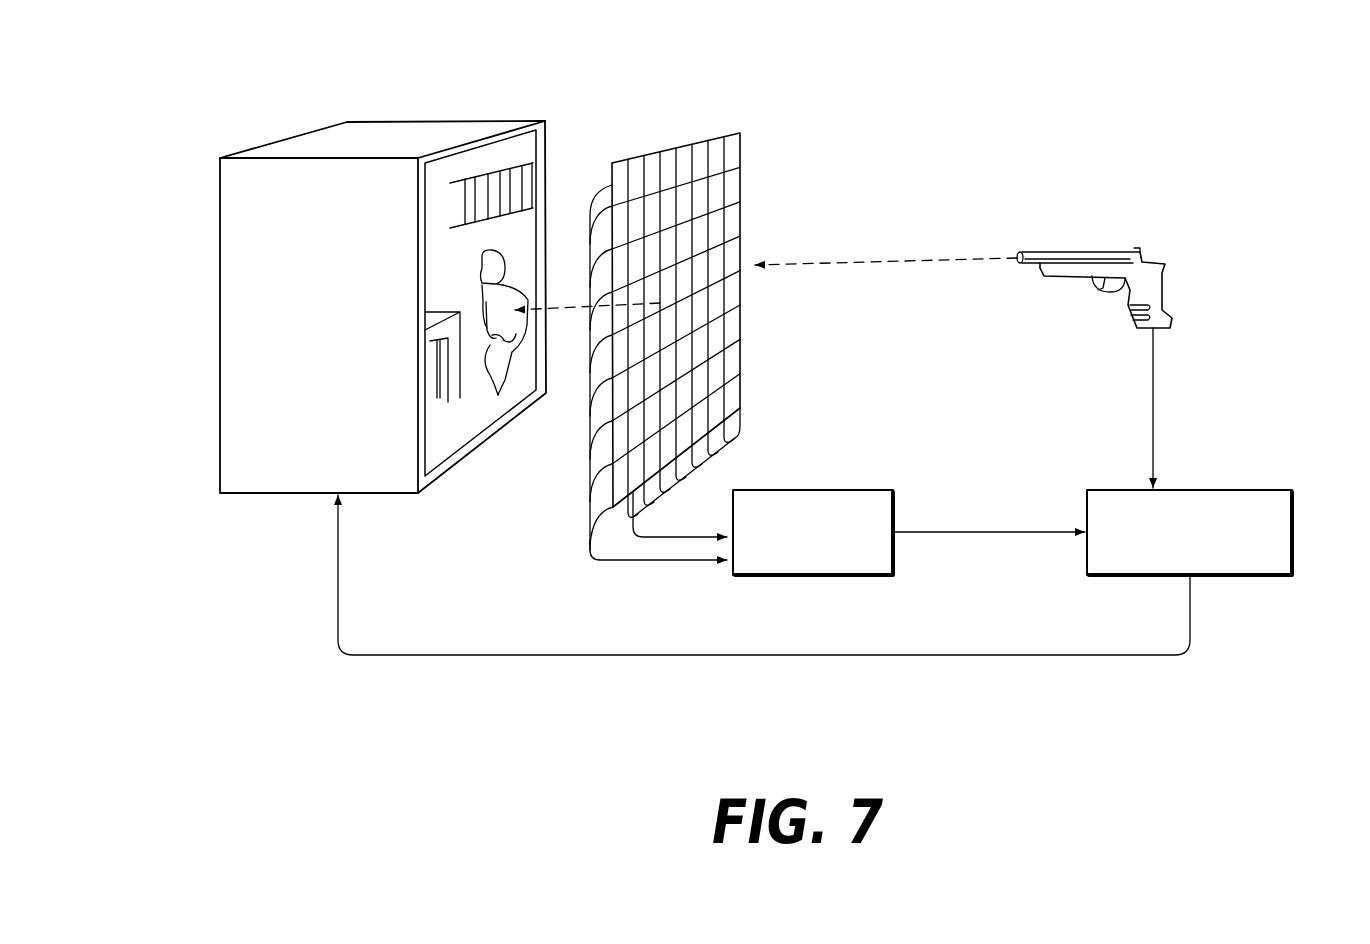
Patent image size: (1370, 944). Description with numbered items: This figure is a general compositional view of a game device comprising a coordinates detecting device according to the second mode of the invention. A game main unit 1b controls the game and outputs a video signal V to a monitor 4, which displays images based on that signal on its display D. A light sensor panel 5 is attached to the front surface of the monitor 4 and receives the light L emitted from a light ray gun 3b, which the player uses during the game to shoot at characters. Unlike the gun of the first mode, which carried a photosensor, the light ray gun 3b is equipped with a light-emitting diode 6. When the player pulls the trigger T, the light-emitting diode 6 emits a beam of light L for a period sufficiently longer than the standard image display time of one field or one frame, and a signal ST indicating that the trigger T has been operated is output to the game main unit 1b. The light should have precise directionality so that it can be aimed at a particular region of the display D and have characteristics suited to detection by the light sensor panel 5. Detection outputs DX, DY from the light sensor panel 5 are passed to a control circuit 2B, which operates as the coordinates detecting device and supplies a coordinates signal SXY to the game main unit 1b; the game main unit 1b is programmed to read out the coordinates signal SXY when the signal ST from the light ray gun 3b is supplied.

The monitor 4 is at (468, 120).
The display D is at (438, 450).
The light sensor panel 5 is at (738, 152).
The X-direction detection signal DX is at (670, 527).
The Y-direction detection signal DY is at (628, 562).
The control circuit 2B is at (857, 490).
The game main unit 1b is at (1190, 490).
The coordinates signal SXY is at (987, 532).
The video signal V is at (657, 655).
The trigger signal ST is at (1155, 420).
The light L is at (895, 265).
The light ray gun 3b is at (1081, 263).
The light-emitting diode 6 is at (1017, 252).
The trigger T is at (1059, 324).